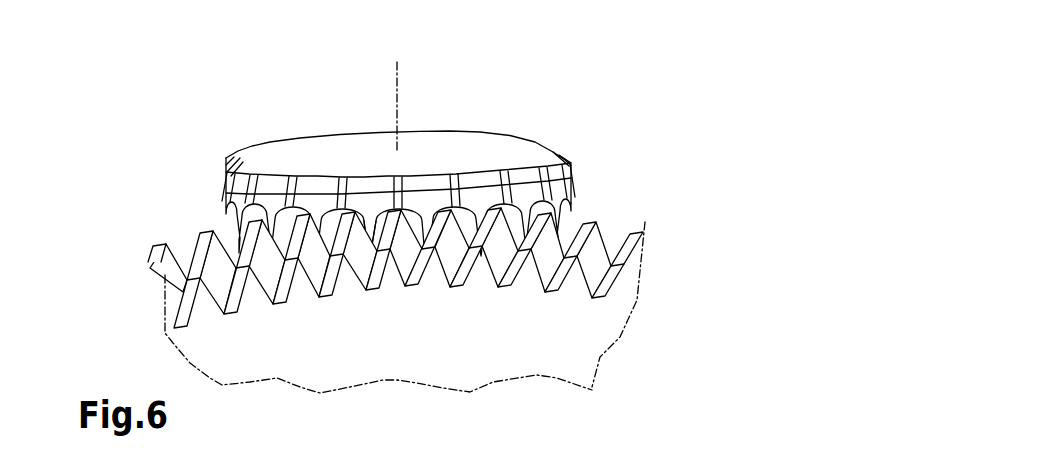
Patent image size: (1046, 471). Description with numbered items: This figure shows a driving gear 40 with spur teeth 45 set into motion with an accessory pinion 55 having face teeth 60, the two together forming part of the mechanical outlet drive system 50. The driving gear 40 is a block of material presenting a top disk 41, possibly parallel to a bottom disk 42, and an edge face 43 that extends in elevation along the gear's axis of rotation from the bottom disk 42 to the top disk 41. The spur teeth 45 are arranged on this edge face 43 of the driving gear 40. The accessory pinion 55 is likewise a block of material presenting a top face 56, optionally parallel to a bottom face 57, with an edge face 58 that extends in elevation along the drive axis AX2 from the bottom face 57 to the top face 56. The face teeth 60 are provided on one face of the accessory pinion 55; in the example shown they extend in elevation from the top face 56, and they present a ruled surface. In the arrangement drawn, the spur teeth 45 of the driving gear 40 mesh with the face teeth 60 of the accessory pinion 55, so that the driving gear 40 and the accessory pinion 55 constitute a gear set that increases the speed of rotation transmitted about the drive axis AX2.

The driving gear 40 is at (435, 290).
The top disk 41 is at (617, 323).
The bottom disk 42 is at (557, 220).
The edge face 43 is at (612, 236).
The spur teeth 45 is at (634, 252).
The mechanical outlet drive system 50 is at (435, 308).
The accessory pinion 55 is at (382, 168).
The top face 56 is at (240, 226).
The bottom face 57 is at (477, 150).
The edge face 58 is at (236, 156).
The face teeth 60 is at (372, 222).
The drive axis AX2 is at (398, 94).